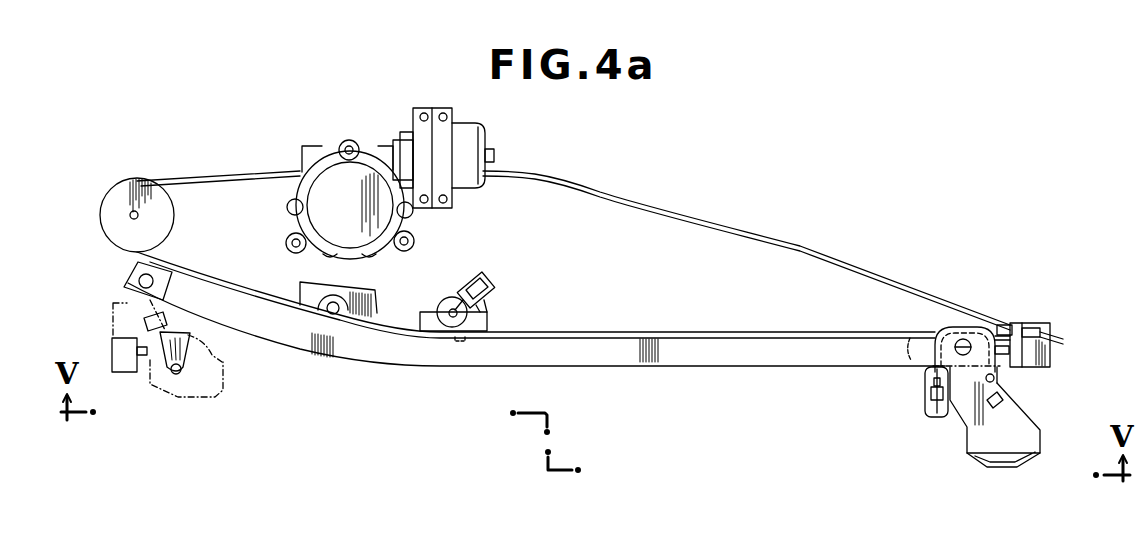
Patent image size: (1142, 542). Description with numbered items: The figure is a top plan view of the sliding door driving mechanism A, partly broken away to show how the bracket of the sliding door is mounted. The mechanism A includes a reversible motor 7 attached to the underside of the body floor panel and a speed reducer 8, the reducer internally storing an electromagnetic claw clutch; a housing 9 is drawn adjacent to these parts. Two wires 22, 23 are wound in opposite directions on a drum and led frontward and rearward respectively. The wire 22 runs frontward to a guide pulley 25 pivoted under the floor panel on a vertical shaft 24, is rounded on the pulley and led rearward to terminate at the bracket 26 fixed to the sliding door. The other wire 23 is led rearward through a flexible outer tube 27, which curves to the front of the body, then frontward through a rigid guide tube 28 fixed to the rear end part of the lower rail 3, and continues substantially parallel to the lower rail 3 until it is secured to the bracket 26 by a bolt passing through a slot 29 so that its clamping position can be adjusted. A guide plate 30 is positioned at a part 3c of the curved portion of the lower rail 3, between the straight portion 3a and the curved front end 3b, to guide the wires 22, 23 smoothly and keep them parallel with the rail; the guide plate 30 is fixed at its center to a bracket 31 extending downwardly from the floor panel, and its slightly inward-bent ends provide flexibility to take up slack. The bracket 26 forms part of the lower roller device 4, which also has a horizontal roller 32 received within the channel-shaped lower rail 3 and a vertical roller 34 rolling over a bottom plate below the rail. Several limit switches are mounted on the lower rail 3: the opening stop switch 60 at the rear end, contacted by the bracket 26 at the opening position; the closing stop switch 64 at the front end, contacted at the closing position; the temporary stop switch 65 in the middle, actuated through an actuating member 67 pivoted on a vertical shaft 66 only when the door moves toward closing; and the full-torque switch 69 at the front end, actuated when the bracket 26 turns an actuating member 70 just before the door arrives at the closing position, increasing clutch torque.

The lower rail 3 is at (678, 367).
The straight portion 3a is at (758, 357).
The curved front end 3b is at (210, 308).
The part of the curved portion 3c is at (341, 364).
The lower roller device 4 is at (1052, 434).
The reversible motor 7 is at (469, 131).
The speed reducer 8 is at (348, 139).
The housing 9 is at (298, 233).
The wire 22 is at (224, 176).
The wire 23 is at (999, 326).
The vertical shaft 24 is at (162, 213).
The guide pulley 25 is at (128, 194).
The bracket 26 is at (1022, 428).
The flexible outer tube 27 is at (763, 231).
The rigid guide tube 28 is at (1031, 324).
The slot 29 is at (923, 404).
The guide plate 30 is at (255, 294).
The bracket 31 is at (368, 297).
The horizontal roller 32 is at (964, 340).
The vertical roller 34 is at (941, 323).
The opening stop switch 60 is at (1003, 350).
The closing stop switch 64 is at (122, 338).
The temporary stop switch 65 is at (482, 284).
The vertical shaft 66 is at (438, 309).
The actuating member 67 is at (488, 313).
The full-torque switch 69 is at (125, 299).
The actuating member 70 is at (220, 367).
The sliding door driving mechanism A is at (562, 171).